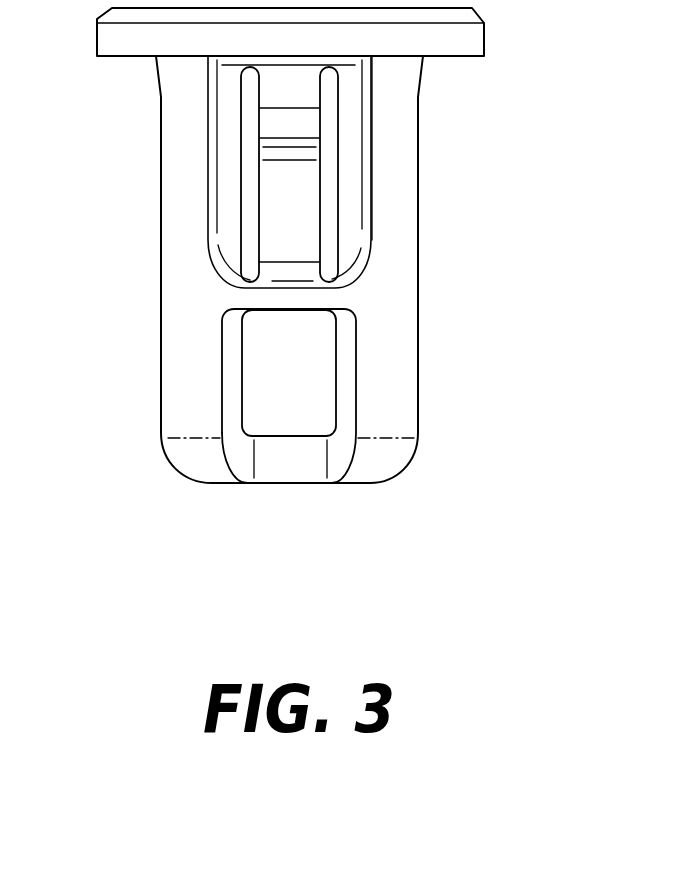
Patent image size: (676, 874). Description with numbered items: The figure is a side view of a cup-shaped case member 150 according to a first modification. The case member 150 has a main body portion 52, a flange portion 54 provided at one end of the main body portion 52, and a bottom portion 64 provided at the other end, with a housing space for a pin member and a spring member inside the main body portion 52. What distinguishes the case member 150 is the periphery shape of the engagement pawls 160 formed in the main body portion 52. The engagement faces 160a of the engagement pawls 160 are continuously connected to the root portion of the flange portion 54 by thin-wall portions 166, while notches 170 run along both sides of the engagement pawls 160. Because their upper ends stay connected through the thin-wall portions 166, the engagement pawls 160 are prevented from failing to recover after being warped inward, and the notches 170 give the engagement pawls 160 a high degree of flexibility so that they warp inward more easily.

The case member 150 is at (309, 309).
The flange portion 54 is at (468, 40).
The main body portion 52 is at (402, 353).
The thin-wall portions 166 is at (272, 79).
The notches 170 is at (240, 171).
The engagement faces 160a is at (299, 122).
The engagement pawls 160 is at (299, 168).
The bottom portion 64 is at (347, 483).